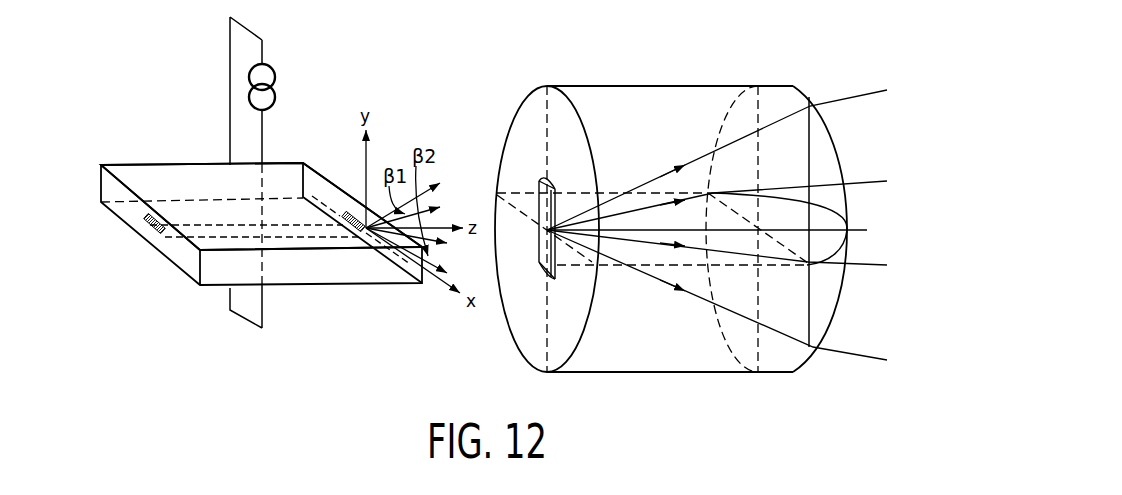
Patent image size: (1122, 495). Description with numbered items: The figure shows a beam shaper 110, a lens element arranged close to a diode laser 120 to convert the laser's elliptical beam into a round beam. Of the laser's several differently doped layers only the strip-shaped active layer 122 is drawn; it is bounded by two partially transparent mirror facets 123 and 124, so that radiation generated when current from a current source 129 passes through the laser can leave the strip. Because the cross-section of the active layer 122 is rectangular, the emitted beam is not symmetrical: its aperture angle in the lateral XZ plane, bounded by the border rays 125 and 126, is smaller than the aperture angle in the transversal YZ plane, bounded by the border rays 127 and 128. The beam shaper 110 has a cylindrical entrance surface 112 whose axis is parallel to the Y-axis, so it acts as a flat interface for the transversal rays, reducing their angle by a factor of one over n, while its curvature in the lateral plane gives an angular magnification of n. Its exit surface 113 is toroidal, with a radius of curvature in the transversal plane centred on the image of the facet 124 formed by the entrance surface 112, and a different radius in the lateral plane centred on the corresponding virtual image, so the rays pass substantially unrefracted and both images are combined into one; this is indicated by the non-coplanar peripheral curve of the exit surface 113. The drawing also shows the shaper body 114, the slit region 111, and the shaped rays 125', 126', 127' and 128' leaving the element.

The beam shaper 110 is at (676, 37).
The light entrance slit 111 is at (540, 226).
The cylindrical entrance surface 112 is at (542, 270).
The toroidal exit surface 113 is at (832, 125).
The cylindrical light guide body 114 is at (527, 120).
The diode laser 120 is at (140, 146).
The active layer 122 is at (192, 222).
The mirror facet 123 is at (152, 232).
The mirror facet 124 is at (352, 232).
The border ray 125 is at (421, 211).
The border ray 126 is at (423, 242).
The border ray 127 is at (421, 199).
The border ray 128 is at (423, 256).
The current source 129 is at (275, 78).
The refracted light beam 125' is at (717, 173).
The refracted light beam 126' is at (717, 289).
The refracted light beam 127' is at (717, 160).
The refracted light beam 128' is at (717, 295).